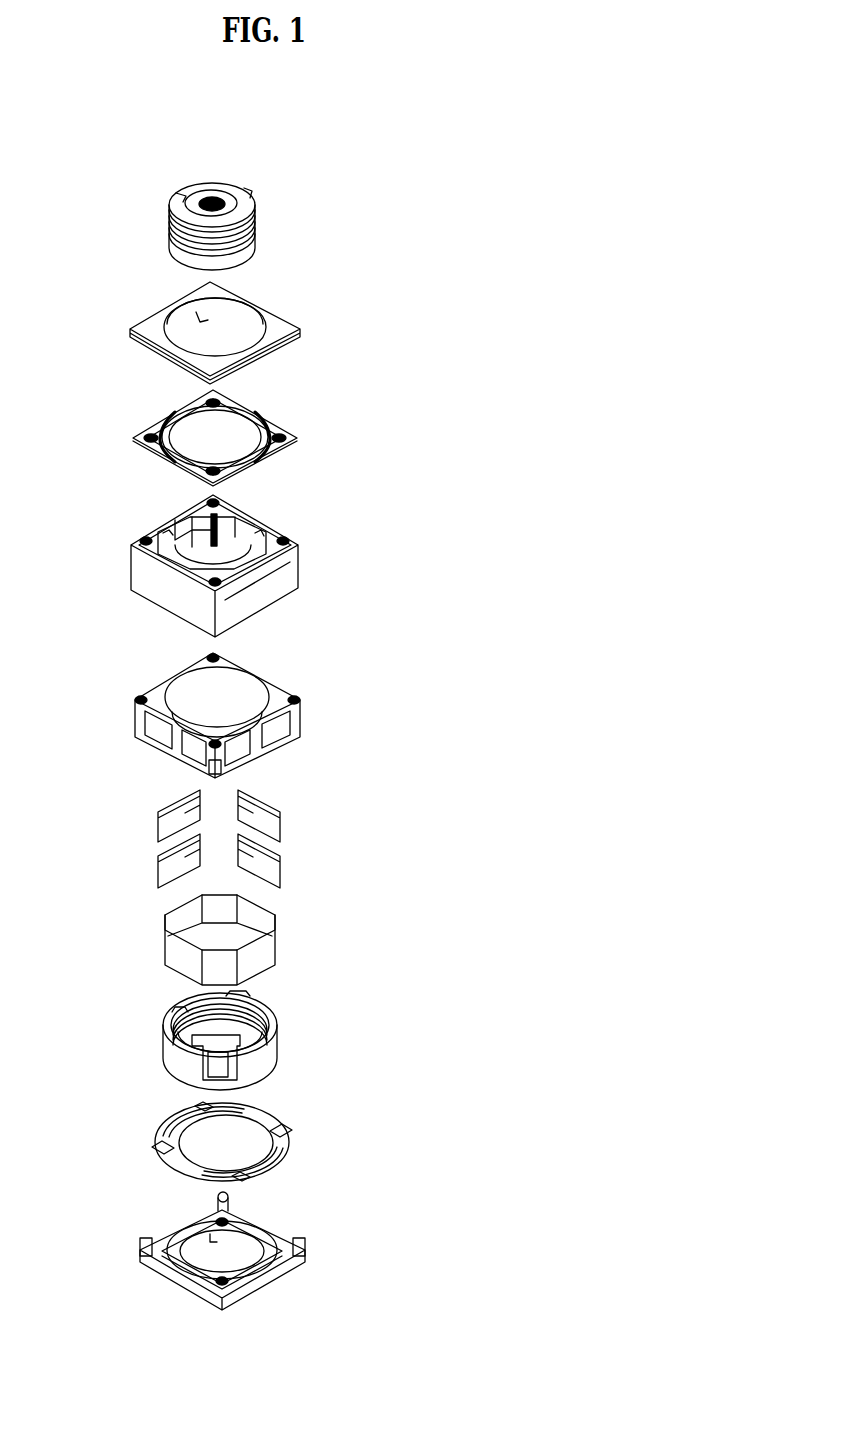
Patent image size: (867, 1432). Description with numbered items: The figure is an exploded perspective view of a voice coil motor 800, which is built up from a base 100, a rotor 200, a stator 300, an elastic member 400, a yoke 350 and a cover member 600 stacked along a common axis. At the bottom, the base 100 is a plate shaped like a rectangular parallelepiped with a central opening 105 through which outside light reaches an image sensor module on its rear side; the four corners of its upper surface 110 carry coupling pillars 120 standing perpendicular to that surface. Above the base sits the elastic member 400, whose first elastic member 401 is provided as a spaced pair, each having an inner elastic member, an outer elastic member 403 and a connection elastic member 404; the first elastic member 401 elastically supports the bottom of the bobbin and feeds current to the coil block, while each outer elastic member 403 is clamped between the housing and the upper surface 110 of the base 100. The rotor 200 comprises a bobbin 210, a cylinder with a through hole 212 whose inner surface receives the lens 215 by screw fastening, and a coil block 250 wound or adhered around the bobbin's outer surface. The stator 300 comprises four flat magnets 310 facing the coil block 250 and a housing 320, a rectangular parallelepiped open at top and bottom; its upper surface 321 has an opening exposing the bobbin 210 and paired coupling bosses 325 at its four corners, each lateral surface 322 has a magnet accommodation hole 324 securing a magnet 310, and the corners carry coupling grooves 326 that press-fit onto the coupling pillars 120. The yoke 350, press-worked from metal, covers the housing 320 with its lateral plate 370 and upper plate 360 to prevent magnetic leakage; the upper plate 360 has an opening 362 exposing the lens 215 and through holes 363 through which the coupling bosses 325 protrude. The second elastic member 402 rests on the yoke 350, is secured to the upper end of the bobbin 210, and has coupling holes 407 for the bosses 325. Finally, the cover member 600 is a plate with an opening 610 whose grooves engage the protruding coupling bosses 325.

The voice coil motor 800 is at (433, 219).
The lens 215 is at (260, 188).
The cover member 600 is at (289, 311).
The opening 610 is at (182, 312).
The second elastic member 402 is at (133, 456).
The coupling hole 407 is at (300, 436).
The yoke 350 is at (124, 600).
The upper plate 360 is at (275, 535).
The opening 362 is at (236, 535).
The through hole 363 is at (150, 540).
The lateral plate 370 is at (268, 598).
The stator 300 is at (400, 752).
The housing 320 is at (316, 722).
The upper surface 321 is at (278, 682).
The lateral surface 322 is at (198, 752).
The magnet accommodation hole 324 is at (175, 735).
The coupling boss 325 is at (152, 690).
The coupling groove 326 is at (210, 777).
The magnet 310 is at (302, 826).
The rotor 200 is at (397, 965).
The coil block 250 is at (307, 948).
The bobbin 210 is at (295, 1049).
The through hole 212 is at (235, 1003).
The elastic member 400 is at (130, 1144).
The first elastic member 401 is at (297, 1136).
The outer elastic member 403 is at (183, 1115).
The connection elastic member 404 is at (167, 1132).
The base 100 is at (322, 1247).
The opening 105 is at (205, 1233).
The upper surface 110 is at (283, 1240).
The coupling pillar 120 is at (140, 1237).